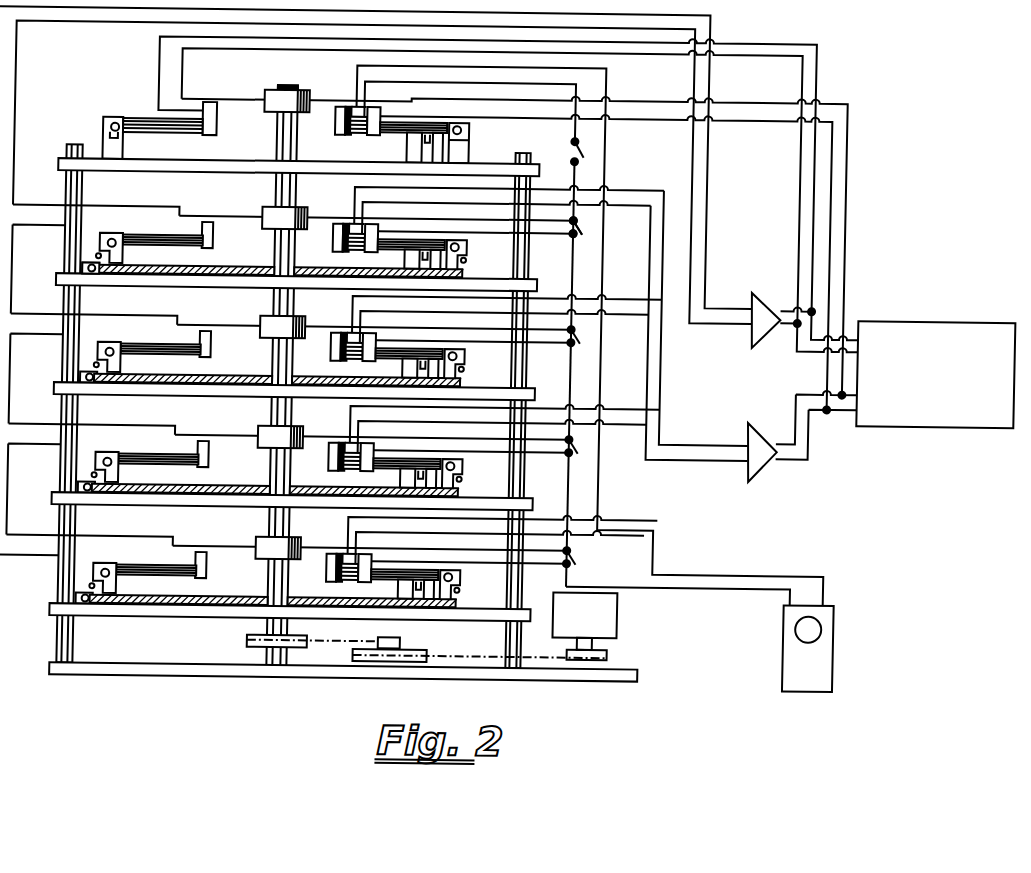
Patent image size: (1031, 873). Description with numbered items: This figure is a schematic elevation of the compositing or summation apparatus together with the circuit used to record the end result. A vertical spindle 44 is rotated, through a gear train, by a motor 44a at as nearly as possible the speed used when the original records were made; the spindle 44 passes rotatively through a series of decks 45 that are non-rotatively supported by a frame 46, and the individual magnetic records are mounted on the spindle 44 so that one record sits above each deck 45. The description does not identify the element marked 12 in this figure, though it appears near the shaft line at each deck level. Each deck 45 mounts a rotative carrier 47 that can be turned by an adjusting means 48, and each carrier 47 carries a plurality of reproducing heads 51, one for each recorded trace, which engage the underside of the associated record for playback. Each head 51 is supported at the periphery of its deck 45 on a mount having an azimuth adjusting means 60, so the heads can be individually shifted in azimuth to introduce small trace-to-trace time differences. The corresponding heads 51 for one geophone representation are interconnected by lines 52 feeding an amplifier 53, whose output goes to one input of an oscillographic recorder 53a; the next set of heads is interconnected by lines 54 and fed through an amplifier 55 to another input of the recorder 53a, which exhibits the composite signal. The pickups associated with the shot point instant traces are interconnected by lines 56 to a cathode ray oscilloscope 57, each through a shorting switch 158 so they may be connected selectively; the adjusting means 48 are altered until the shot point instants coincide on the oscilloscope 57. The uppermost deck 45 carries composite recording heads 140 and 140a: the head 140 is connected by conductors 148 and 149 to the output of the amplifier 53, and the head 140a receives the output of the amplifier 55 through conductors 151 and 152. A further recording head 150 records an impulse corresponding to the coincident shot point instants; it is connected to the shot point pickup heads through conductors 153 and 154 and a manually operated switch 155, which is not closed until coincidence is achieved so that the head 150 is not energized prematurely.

The shaft 12 is at (225, 214).
The vertical spindle 44 is at (244, 632).
The motor 44a is at (601, 627).
The deck 45 is at (501, 266).
The frame 46 is at (55, 248).
The rotative carrier 47 is at (313, 266).
The adjusting means 48 is at (78, 275).
The reproducing head 51 is at (209, 237).
The lines 52 is at (686, 228).
The amplifier 53 is at (783, 288).
The oscillographic recorder 53a is at (958, 317).
The lines 54 is at (718, 451).
The amplifier 55 is at (783, 424).
The lines 56 is at (725, 559).
The cathode ray oscilloscope 57 is at (837, 636).
The azimuth adjusting means 60 is at (468, 261).
The magnetic recording head 140 is at (211, 128).
The magnetic recording head 140a is at (352, 140).
The conductor 148 is at (796, 74).
The conductor 149 is at (810, 88).
The recording head 150 is at (330, 128).
The conductor 151 is at (828, 178).
The conductor 152 is at (843, 196).
The conductor 153 is at (512, 79).
The conductor 154 is at (605, 68).
The manually operated switch 155 is at (556, 151).
The shorting switch 158 is at (579, 232).